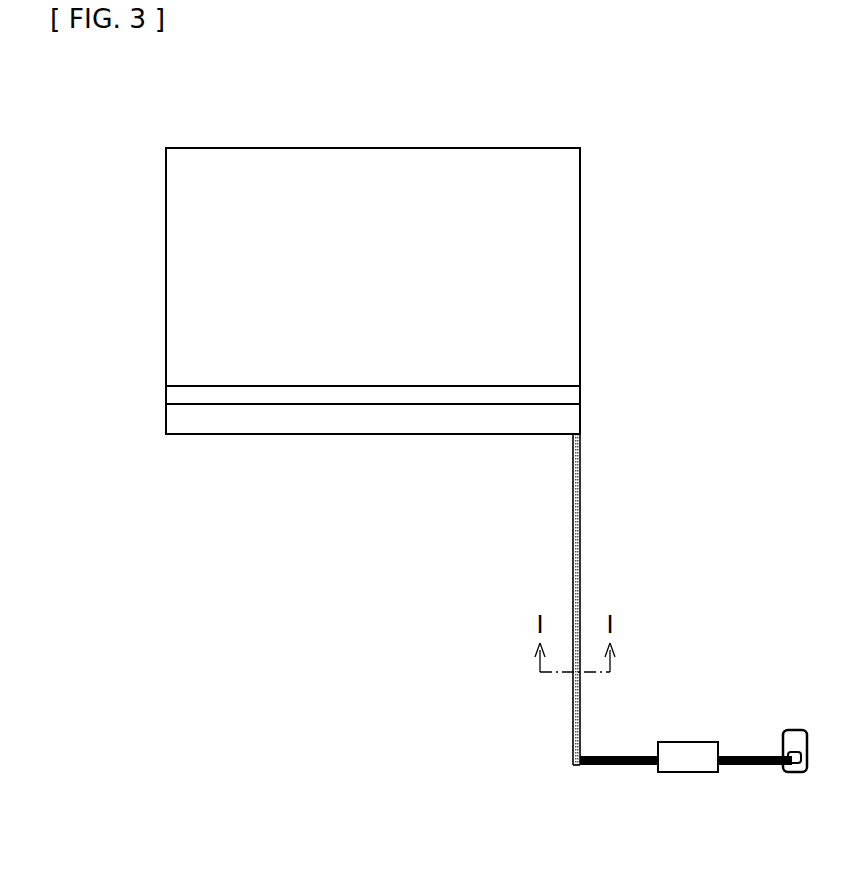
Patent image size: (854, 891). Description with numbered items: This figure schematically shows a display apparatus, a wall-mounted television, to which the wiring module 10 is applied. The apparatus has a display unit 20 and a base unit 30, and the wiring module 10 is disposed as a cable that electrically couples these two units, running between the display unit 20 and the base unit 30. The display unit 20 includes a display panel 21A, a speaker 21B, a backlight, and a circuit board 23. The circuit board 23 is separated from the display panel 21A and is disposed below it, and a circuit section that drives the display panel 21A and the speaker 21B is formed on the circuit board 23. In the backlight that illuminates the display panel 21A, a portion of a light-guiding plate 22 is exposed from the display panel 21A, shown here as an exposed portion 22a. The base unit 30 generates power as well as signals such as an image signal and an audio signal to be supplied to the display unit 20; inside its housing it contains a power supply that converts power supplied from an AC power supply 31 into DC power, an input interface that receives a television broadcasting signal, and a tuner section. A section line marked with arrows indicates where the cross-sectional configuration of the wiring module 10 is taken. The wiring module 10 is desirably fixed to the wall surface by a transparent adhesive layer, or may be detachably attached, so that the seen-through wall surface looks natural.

The wiring module 10 is at (582, 533).
The display unit 20 is at (620, 117).
The display panel 21A is at (441, 291).
The speaker 21B is at (580, 267).
The light-guiding plate 22 is at (440, 396).
The exposed portion 22a is at (580, 386).
The circuit board 23 is at (580, 420).
The base unit 30 is at (688, 741).
The AC power supply 31 is at (809, 771).